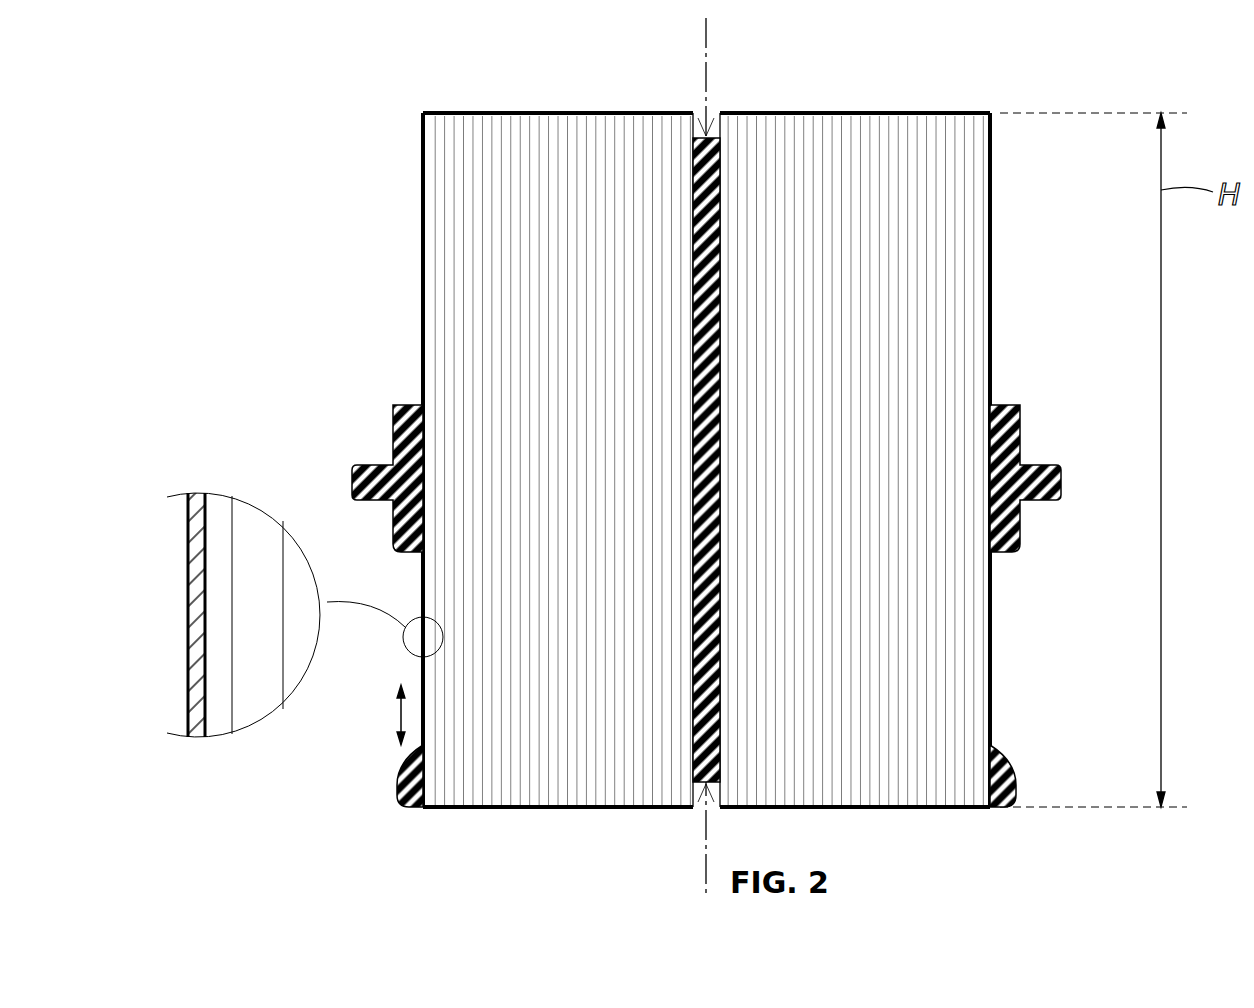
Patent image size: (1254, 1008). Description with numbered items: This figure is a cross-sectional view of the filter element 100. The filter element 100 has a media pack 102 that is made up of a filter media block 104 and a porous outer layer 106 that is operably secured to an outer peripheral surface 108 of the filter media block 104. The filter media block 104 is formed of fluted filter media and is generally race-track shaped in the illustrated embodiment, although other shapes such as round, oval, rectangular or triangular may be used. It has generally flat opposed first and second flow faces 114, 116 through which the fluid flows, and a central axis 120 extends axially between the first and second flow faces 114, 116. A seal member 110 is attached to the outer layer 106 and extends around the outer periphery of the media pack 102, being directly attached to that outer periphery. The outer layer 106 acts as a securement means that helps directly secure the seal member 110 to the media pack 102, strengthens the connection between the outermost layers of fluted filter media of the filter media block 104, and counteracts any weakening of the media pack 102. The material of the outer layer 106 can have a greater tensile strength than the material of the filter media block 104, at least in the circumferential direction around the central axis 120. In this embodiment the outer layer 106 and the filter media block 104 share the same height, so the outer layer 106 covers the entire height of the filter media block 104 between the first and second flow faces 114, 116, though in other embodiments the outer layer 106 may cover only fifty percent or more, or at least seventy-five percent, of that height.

The filter element 100 is at (1085, 834).
The media pack 102 is at (589, 828).
The filter media block 104 is at (483, 798).
The porous outer layer 106 is at (188, 542).
The outer peripheral surface 108 is at (205, 637).
The seal member 110 is at (403, 800).
The first flow face 114 is at (698, 136).
The second flow face 116 is at (860, 808).
The central axis 120 is at (708, 99).